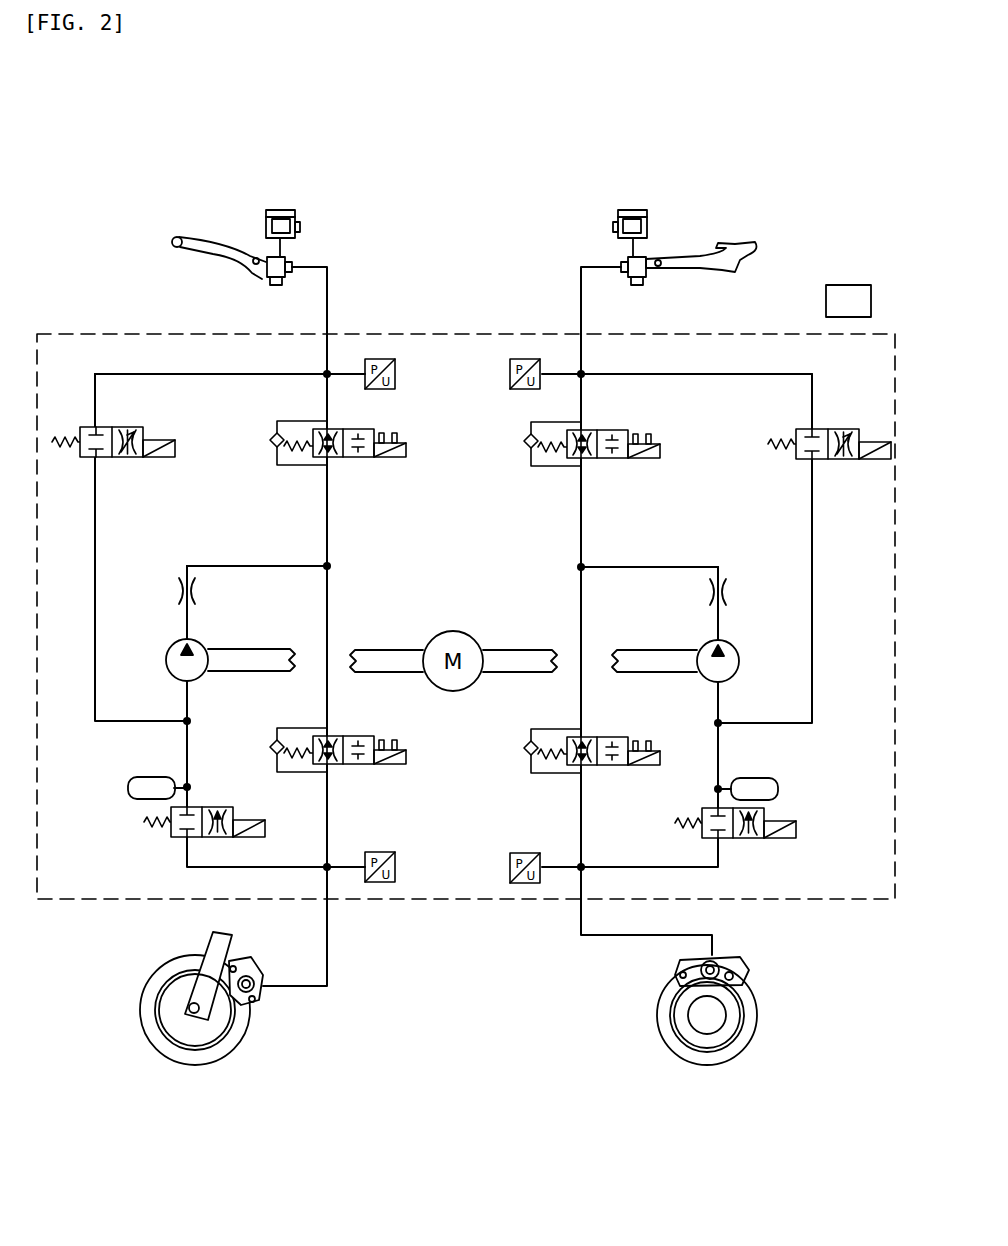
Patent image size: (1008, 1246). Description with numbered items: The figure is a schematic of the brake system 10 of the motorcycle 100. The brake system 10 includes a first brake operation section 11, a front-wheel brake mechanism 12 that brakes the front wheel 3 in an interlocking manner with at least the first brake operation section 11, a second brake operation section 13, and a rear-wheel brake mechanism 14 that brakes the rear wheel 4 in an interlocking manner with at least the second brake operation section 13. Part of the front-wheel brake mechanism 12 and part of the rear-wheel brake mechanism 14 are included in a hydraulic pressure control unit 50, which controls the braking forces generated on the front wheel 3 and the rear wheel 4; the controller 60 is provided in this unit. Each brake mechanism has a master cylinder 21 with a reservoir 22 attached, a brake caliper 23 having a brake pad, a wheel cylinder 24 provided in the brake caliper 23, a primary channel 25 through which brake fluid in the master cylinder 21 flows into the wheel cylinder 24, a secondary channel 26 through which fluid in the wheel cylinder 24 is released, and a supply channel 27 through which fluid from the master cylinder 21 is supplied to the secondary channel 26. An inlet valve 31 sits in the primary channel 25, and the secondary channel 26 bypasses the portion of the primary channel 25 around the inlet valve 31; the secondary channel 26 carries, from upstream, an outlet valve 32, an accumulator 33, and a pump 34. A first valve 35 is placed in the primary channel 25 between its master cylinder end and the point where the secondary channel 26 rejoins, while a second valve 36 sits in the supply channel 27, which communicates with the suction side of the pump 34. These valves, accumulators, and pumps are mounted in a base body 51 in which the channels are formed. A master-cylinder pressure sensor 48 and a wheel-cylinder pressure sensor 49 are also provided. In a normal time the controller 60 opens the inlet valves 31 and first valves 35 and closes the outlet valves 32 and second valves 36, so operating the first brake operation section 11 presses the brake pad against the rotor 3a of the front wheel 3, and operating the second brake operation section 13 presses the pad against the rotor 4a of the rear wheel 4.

The motorcycle 100 is at (838, 105).
The front-wheel brake mechanism 12 is at (370, 154).
The rear-wheel brake mechanism 14 is at (542, 154).
The brake system 10 is at (133, 224).
The first brake operation section 11 is at (203, 240).
The second brake operation section 13 is at (737, 250).
The master cylinder 21 is at (282, 286).
The reservoir 22 is at (281, 209).
The brake caliper 23 is at (252, 966).
The wheel cylinder 24 is at (262, 992).
The primary channel 25 is at (327, 503).
The secondary channel 26 is at (258, 565).
The supply channel 27 is at (233, 377).
The inlet valve 31 is at (363, 767).
The outlet valve 32 is at (218, 806).
The accumulator 33 is at (150, 776).
The pump 34 is at (166, 660).
The first valve 35 is at (390, 459).
The second valve 36 is at (148, 459).
The master-cylinder pressure sensor 48 is at (396, 384).
The wheel-cylinder pressure sensor 49 is at (396, 877).
The hydraulic pressure control unit 50 is at (793, 259).
The base body 51 is at (62, 333).
The controller 60 is at (853, 274).
The front wheel 3 is at (199, 1086).
The rotor 3a is at (243, 1040).
The rear wheel 4 is at (713, 1086).
The rotor 4a is at (666, 1042).